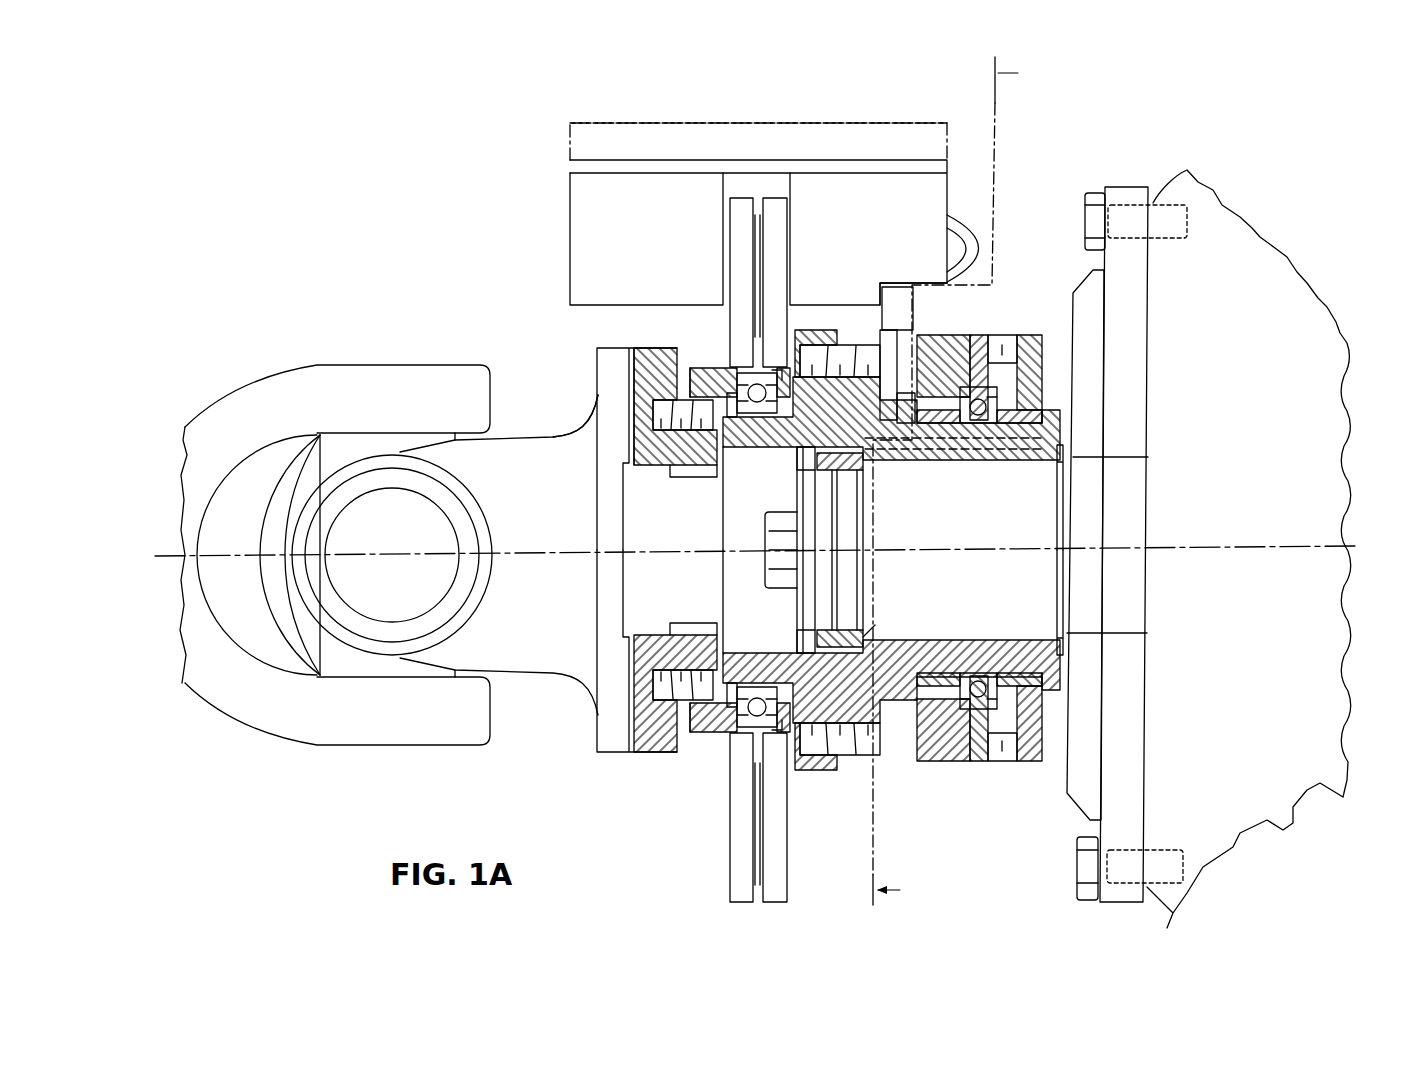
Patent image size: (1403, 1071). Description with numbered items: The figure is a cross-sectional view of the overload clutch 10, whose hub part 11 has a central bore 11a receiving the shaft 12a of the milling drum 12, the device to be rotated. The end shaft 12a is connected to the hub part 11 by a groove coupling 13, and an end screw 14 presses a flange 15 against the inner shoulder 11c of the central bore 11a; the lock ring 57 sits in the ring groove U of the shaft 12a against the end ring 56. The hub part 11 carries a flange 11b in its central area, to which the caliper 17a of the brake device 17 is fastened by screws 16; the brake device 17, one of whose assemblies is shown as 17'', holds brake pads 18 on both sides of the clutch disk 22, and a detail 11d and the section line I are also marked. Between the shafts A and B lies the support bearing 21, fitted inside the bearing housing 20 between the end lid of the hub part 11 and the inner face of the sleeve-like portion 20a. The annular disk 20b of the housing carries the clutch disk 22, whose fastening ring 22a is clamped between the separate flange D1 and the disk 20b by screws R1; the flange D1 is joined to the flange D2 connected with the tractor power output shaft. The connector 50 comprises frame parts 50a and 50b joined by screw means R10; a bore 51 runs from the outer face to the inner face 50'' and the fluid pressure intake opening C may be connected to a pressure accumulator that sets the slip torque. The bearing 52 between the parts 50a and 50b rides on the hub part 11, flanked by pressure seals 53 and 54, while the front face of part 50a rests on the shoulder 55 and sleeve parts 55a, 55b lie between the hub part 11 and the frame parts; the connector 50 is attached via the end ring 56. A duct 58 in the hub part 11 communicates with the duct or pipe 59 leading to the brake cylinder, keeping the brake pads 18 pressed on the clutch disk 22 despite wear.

The overload clutch 10 is at (432, 178).
The shaft A is at (440, 302).
The shaft B is at (1032, 276).
The fluid pressure intake opening C is at (1003, 336).
The separate flange D1 is at (638, 347).
The flange D2 is at (607, 382).
The screws R1 is at (628, 418).
The screw means R10 is at (1018, 755).
The ring groove U is at (1057, 575).
The section line I is at (945, 482).
The hub part 11 is at (972, 458).
The central bore 11a is at (926, 577).
The flange 11b is at (808, 330).
The inner shoulder 11c is at (887, 625).
The hub bearing 11d is at (752, 550).
The milling drum 12 is at (1261, 474).
The shaft 12a is at (957, 610).
The groove coupling 13 is at (975, 636).
The end screw 14 is at (766, 570).
The flange 15 is at (796, 626).
The screws 16 is at (847, 342).
The brake device 17 is at (797, 202).
The brake device assembly 17'' is at (783, 120).
The caliper 17a is at (905, 241).
The brake pads 18 is at (812, 246).
The bearing housing 20 is at (676, 474).
The sleeve-like portion 20a is at (740, 365).
The annular disk 20b is at (698, 474).
The bearing 21 is at (780, 468).
The clutch disk 22 is at (771, 197).
The fastening ring 22a is at (688, 366).
The connector 50 is at (927, 527).
The flange-like frame part 50a is at (963, 337).
The flange-like frame part 50b is at (1022, 338).
The inner face 50'' is at (1101, 521).
The bore 51 is at (1047, 345).
The bearing 52 is at (995, 432).
The pressure seal 53 is at (1085, 545).
The pressure seal 54 is at (1025, 395).
The shoulder 55 is at (917, 424).
The sleeve part 55a is at (955, 432).
The sleeve part 55b is at (1018, 428).
The end ring 56 is at (1107, 531).
The lock ring 57 is at (1073, 633).
The duct 58 is at (876, 466).
The duct or pipe 59 is at (980, 222).